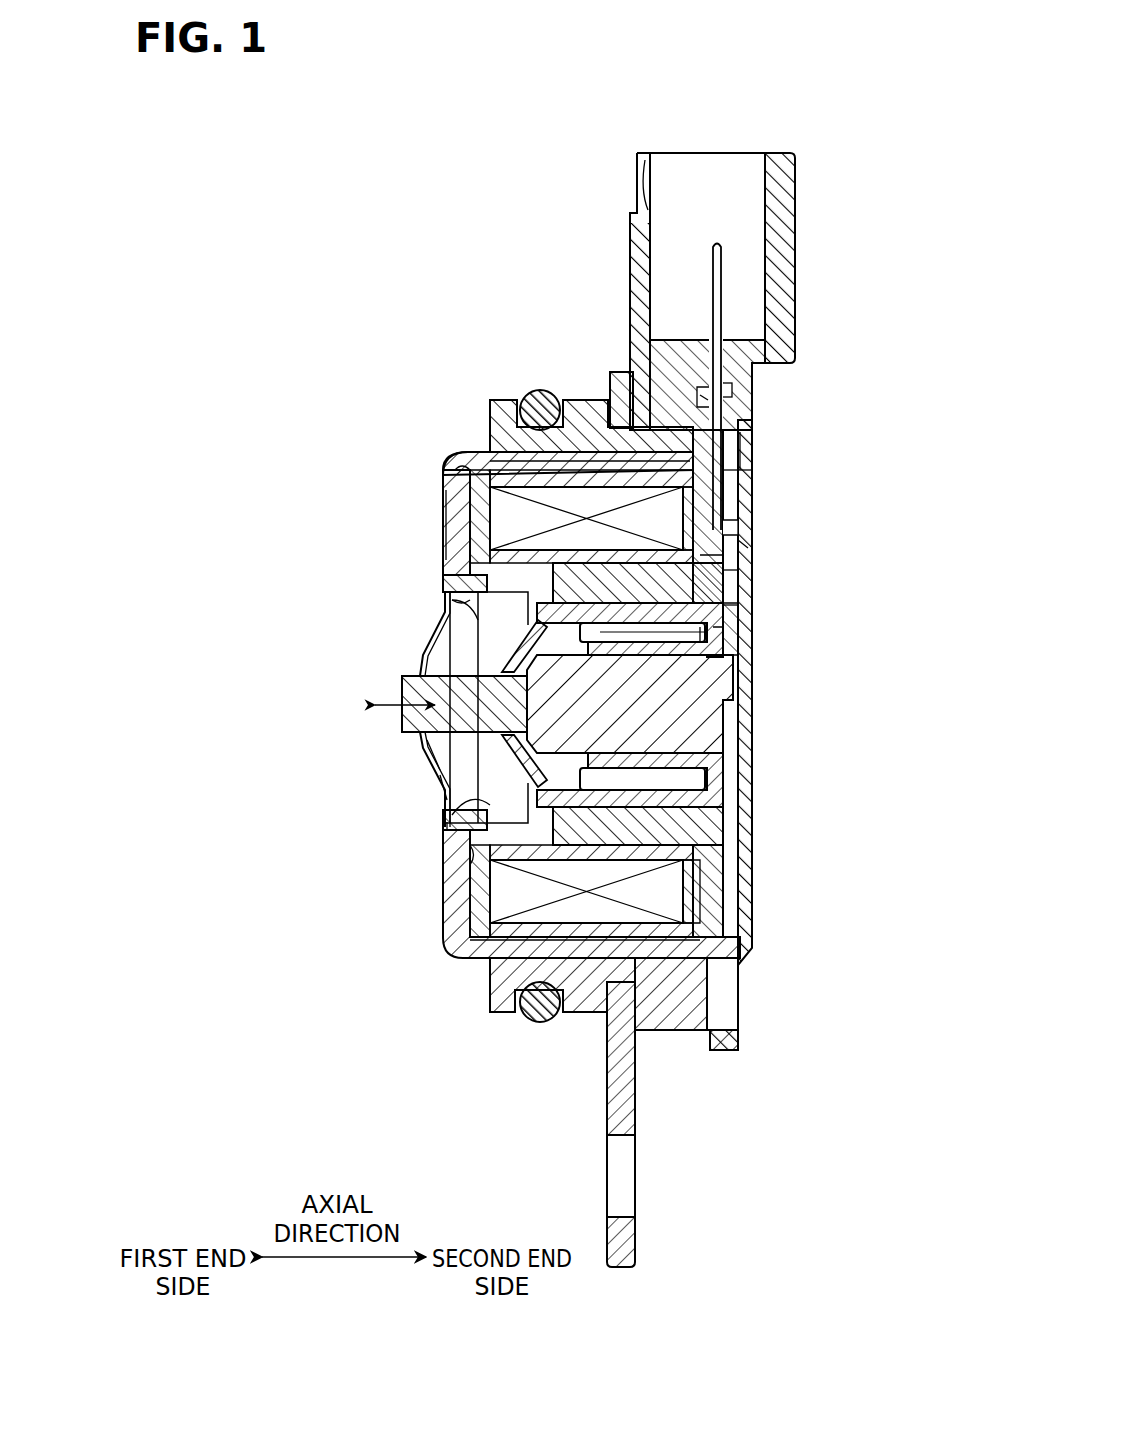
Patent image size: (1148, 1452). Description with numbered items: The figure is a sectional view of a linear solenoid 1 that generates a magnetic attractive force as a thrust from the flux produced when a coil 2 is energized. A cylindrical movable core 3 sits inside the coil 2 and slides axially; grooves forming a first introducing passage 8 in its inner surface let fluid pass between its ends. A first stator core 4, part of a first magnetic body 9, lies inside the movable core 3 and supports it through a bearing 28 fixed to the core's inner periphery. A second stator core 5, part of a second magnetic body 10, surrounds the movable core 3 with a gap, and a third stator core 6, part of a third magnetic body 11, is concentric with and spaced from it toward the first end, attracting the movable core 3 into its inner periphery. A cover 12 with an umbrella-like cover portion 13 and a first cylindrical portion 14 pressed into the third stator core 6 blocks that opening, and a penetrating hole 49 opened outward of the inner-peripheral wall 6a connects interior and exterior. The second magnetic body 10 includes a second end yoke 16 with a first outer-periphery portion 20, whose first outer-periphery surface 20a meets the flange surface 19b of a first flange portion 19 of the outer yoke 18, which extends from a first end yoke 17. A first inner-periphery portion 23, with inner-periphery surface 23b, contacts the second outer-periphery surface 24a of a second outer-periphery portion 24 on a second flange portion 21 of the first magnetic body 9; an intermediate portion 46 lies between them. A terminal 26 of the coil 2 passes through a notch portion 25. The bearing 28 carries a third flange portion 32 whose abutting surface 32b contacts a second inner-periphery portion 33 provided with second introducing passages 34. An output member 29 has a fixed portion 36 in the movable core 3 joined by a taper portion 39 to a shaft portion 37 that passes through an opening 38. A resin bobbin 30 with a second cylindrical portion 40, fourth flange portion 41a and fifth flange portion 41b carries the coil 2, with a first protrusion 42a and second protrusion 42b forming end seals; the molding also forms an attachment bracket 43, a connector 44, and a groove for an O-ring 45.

The linear solenoid 1 is at (417, 185).
The coil 2 is at (495, 420).
The movable core 3 is at (495, 960).
The first stator core 4 is at (470, 595).
The second stator core 5 is at (480, 950).
The third stator core 6 is at (445, 842).
The inner-peripheral wall 6a is at (440, 825).
The first introducing passage 8 is at (695, 820).
The first magnetic body 9 is at (740, 760).
The second magnetic body 10 is at (470, 903).
The third magnetic body 11 is at (440, 460).
The cover 12 is at (440, 605).
The cover portion 13 is at (435, 645).
The first cylindrical portion 14 is at (440, 623).
The second end yoke 16 is at (770, 500).
The first end yoke 17 is at (455, 505).
The outer yoke 18 is at (600, 455).
The first flange portion 19 is at (690, 398).
The flange surface 19b is at (745, 440).
The first outer-periphery portion 20 is at (730, 420).
The first outer-periphery surface 20a is at (697, 398).
The second flange portion 21 is at (760, 645).
The first inner-periphery portion 23 is at (740, 560).
The inner-periphery surface 23b is at (735, 575).
The second outer-periphery portion 24 is at (740, 595).
The second outer-periphery surface 24a is at (735, 610).
The notch portion 25 is at (750, 525).
The terminal 26 is at (722, 273).
The bearing 28 is at (700, 700).
The output member 29 is at (397, 690).
The bobbin 30 is at (460, 575).
The third flange portion 32 is at (742, 690).
The abutting surface 32b is at (727, 665).
The second inner-periphery portion 33 is at (725, 640).
The second introducing passage 34 is at (735, 625).
The fixed portion 36 is at (432, 790).
The shaft portion 37 is at (405, 708).
The opening 38 is at (410, 690).
The taper portion 39 is at (432, 765).
The second cylindrical portion 40 is at (695, 880).
The fourth flange portion 41a is at (470, 525).
The fifth flange portion 41b is at (695, 905).
The first protrusion 42a is at (460, 472).
The second protrusion 42b is at (700, 930).
The attachment bracket 43 is at (627, 1080).
The connector 44 is at (746, 150).
The O-ring 45 is at (545, 400).
The intermediate portion 46 is at (757, 480).
The penetrating hole 49 is at (455, 880).